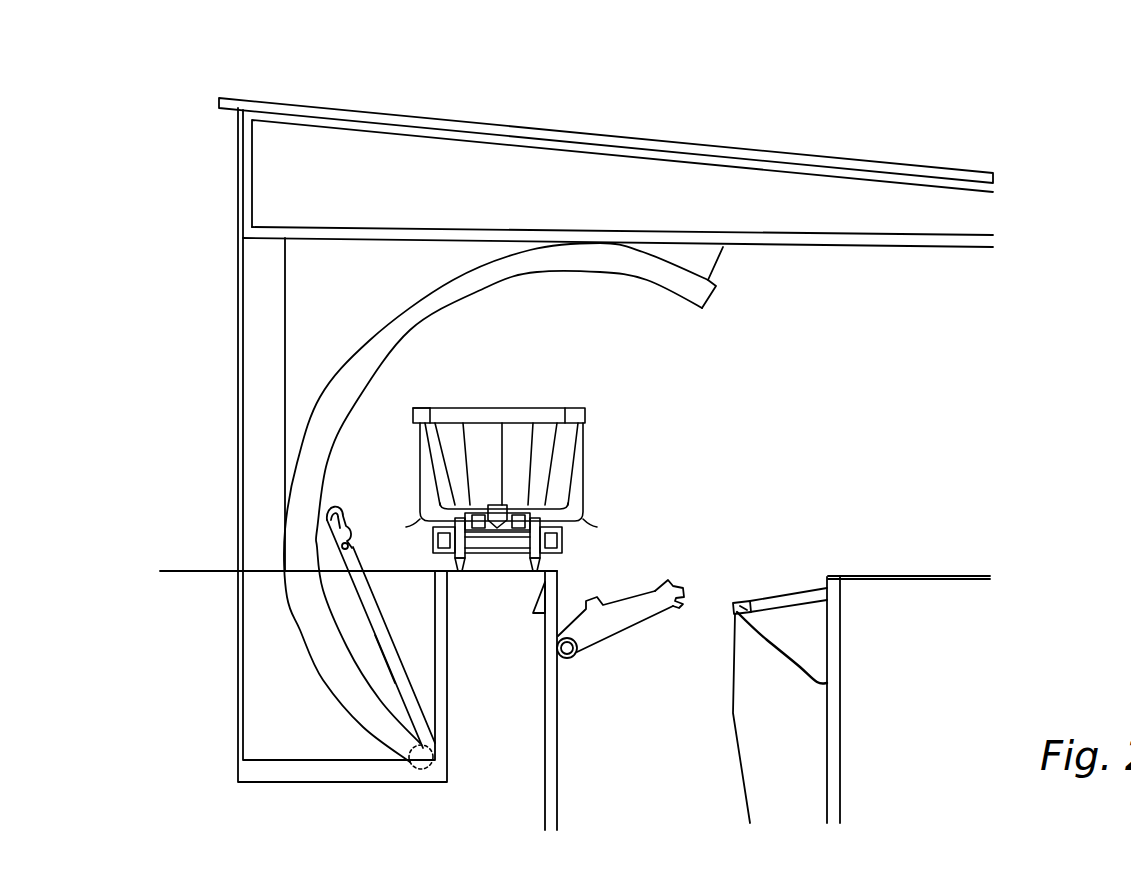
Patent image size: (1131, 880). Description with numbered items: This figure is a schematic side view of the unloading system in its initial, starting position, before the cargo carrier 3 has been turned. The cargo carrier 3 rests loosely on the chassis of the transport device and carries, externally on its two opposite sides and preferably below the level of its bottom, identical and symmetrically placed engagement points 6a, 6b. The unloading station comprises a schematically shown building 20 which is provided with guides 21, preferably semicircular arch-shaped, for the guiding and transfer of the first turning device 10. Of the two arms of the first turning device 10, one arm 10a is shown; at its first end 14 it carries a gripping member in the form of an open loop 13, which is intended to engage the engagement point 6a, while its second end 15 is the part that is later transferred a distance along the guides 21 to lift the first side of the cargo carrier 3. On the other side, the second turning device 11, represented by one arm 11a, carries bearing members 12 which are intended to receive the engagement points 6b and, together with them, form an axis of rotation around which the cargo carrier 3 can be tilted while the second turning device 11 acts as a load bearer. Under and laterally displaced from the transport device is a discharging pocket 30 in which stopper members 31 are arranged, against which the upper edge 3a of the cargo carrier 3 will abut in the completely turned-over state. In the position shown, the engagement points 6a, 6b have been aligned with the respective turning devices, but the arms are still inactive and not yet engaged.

The building 20 is at (540, 440).
The guides 21 is at (470, 277).
The cargo carrier 3 is at (521, 470).
The upper edge 3a is at (425, 408).
The engagement points 6a is at (418, 526).
The engagement points 6b is at (590, 525).
The first turning device 10 is at (378, 603).
The arm 10a is at (380, 654).
The gripping member 13 is at (345, 511).
The first end 14 is at (345, 548).
The second end 15 is at (430, 757).
The discharging pocket 30 is at (660, 770).
The stopper members 31 is at (828, 683).
The second turning device 11 is at (645, 620).
The arm 11a is at (618, 618).
The bearing members 12 is at (676, 590).